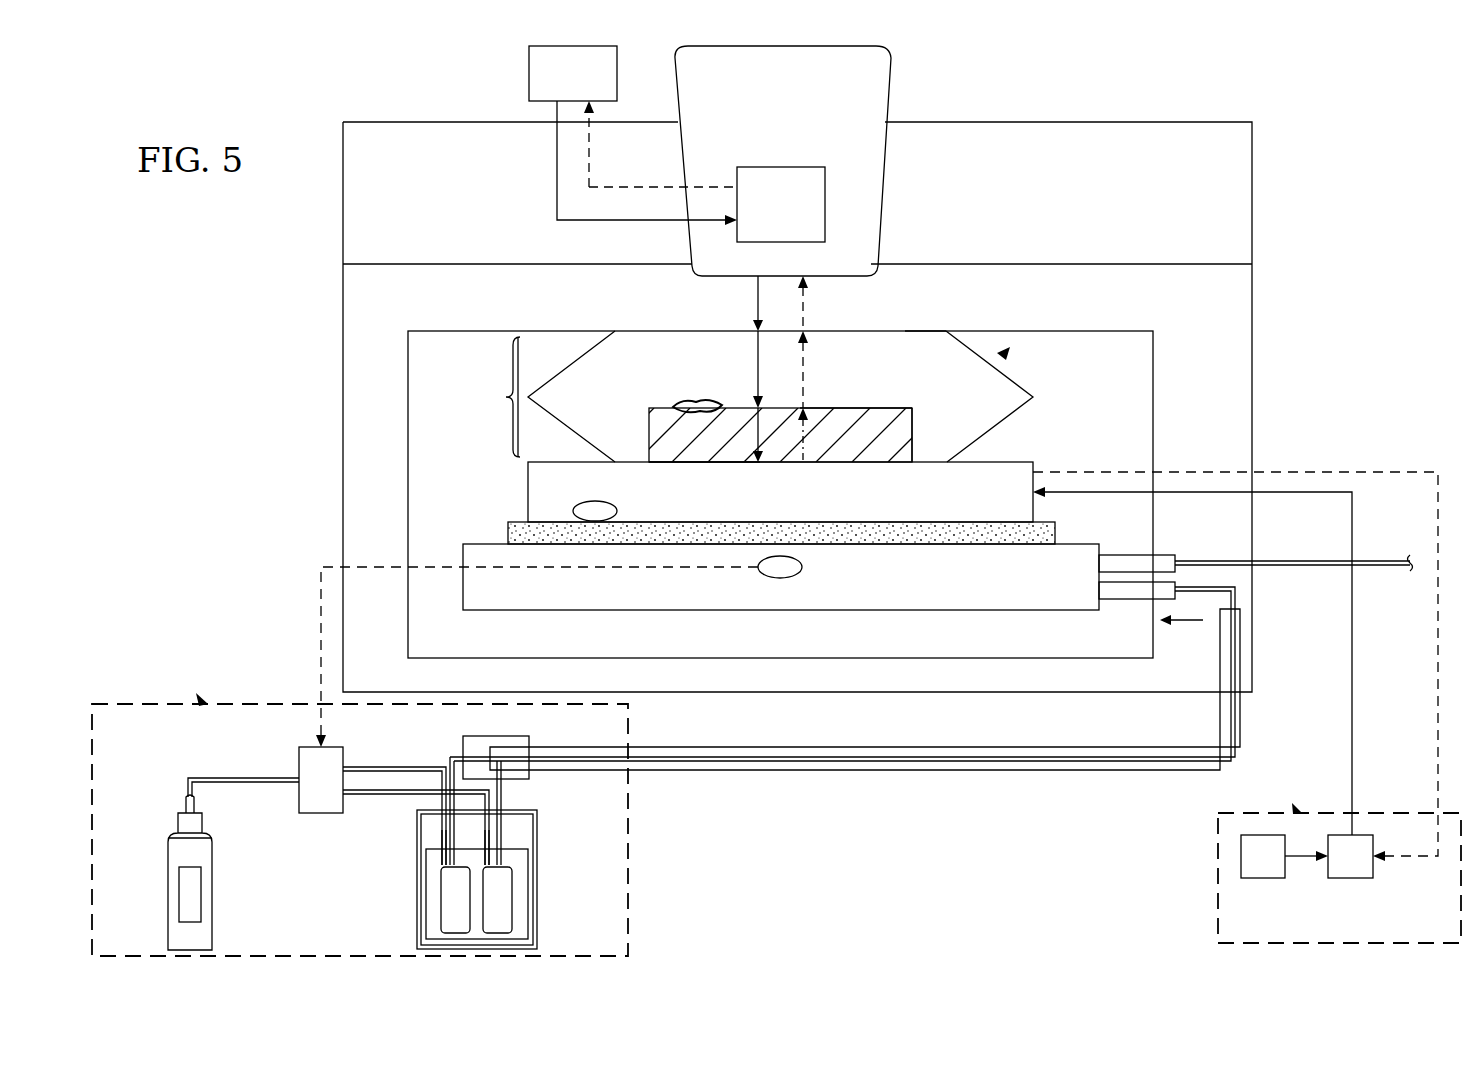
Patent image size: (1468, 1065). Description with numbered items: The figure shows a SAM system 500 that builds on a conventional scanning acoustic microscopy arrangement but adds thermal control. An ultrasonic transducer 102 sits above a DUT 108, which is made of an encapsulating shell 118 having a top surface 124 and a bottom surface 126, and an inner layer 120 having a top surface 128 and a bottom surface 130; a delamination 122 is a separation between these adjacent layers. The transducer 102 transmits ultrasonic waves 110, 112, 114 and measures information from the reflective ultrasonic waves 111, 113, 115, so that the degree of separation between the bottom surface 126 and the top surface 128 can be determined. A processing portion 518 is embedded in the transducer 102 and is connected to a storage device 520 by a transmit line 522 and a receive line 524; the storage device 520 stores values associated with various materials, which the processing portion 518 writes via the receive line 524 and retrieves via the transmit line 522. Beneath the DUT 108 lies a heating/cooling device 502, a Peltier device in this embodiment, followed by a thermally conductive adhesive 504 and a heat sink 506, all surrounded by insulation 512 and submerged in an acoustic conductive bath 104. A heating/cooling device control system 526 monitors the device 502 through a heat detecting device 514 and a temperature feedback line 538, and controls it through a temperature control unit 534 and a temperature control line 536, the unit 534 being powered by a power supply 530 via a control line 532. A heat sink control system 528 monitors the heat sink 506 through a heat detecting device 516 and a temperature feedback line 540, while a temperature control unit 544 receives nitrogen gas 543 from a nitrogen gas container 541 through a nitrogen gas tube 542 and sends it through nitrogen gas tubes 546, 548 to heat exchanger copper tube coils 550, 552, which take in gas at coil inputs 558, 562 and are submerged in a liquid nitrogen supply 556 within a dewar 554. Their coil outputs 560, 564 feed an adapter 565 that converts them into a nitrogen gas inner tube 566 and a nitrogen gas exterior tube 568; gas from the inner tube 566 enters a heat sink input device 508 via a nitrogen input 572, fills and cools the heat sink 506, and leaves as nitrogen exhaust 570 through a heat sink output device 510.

The SAM system 500 is at (288, 100).
The ultrasonic transducer 102 is at (761, 114).
The acoustic conductive bath 104 is at (1045, 266).
The DUT 108 is at (488, 397).
The ultrasonic wave 110 is at (757, 312).
The reflective ultrasonic wave 111 is at (805, 312).
The ultrasonic wave 112 is at (757, 368).
The reflective ultrasonic wave 113 is at (805, 368).
The ultrasonic wave 114 is at (758, 435).
The reflective ultrasonic wave 115 is at (805, 440).
The encapsulating shell 118 is at (900, 338).
The inner layer 120 is at (683, 455).
The delamination 122 is at (665, 405).
The top surface 124 is at (1008, 356).
The bottom surface 126 is at (913, 422).
The top surface 128 is at (895, 406).
The bottom surface 130 is at (880, 465).
The heating/cooling device 502 is at (943, 502).
The thermally conductive adhesive 504 is at (508, 532).
The heat sink 506 is at (988, 589).
The heat sink input device 508 is at (1130, 600).
The heat sink output device 510 is at (1128, 555).
The insulation 512 is at (458, 336).
The heat detecting device 514 is at (575, 508).
The heat detecting device 516 is at (802, 567).
The processing portion 518 is at (759, 216).
The storage device 520 is at (551, 85).
The transmit line 522 is at (556, 172).
The receive line 524 is at (589, 163).
The heating/cooling device control system 526 is at (1297, 808).
The heat sink control system 528 is at (202, 700).
The power supply 530 is at (1262, 879).
The control line 532 is at (1305, 860).
The temperature control unit 534 is at (1352, 879).
The temperature control line 536 is at (1353, 640).
The temperature feedback line 538 is at (1410, 860).
The temperature feedback line 540 is at (320, 648).
The nitrogen gas container 541 is at (212, 893).
The nitrogen gas tube 542 is at (245, 777).
The nitrogen gas 543 is at (182, 894).
The temperature control unit 544 is at (317, 814).
The nitrogen gas tube 546 is at (385, 768).
The nitrogen gas tube 548 is at (408, 790).
The heat exchanger copper tube coil 550 is at (445, 910).
The heat exchanger copper tube coil 552 is at (505, 910).
The dewar 554 is at (538, 888).
The liquid nitrogen supply 556 is at (430, 885).
The coil input 558 is at (438, 848).
The coil output 560 is at (442, 822).
The coil input 562 is at (505, 822).
The coil output 564 is at (518, 852).
The adapter 565 is at (530, 741).
The nitrogen gas inner tube 566 is at (848, 771).
The nitrogen gas exterior tube 568 is at (900, 771).
The nitrogen exhaust 570 is at (1290, 568).
The nitrogen input 572 is at (1203, 620).